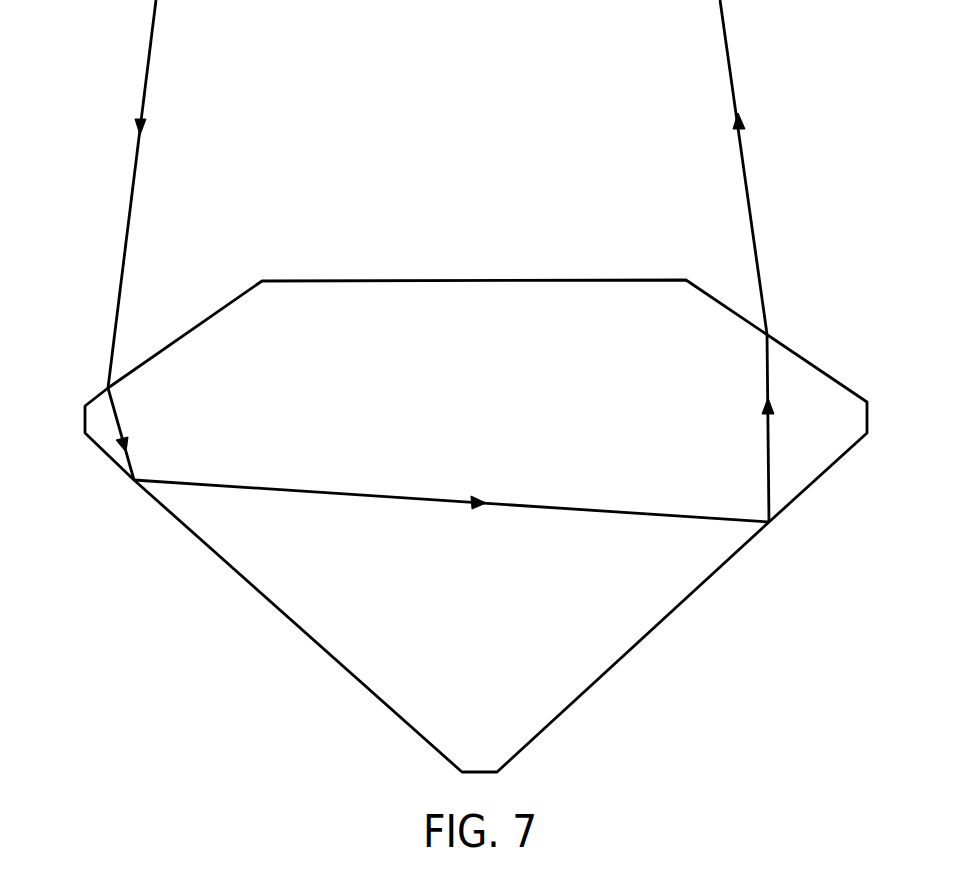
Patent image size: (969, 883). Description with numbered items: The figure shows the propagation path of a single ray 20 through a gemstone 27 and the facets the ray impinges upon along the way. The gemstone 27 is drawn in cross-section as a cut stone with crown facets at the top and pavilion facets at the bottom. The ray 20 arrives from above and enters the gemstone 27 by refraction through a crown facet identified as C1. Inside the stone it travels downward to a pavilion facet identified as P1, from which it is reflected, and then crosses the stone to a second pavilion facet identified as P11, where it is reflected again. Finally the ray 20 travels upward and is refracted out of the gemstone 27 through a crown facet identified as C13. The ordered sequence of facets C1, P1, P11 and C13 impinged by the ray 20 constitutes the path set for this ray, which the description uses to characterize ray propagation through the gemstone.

The ray 20 is at (133, 209).
The gemstone 27 is at (640, 642).
The crown facet C1 is at (100, 385).
The pavilion facet P1 is at (127, 487).
The pavilion facet P11 is at (780, 525).
The crown facet C13 is at (783, 336).